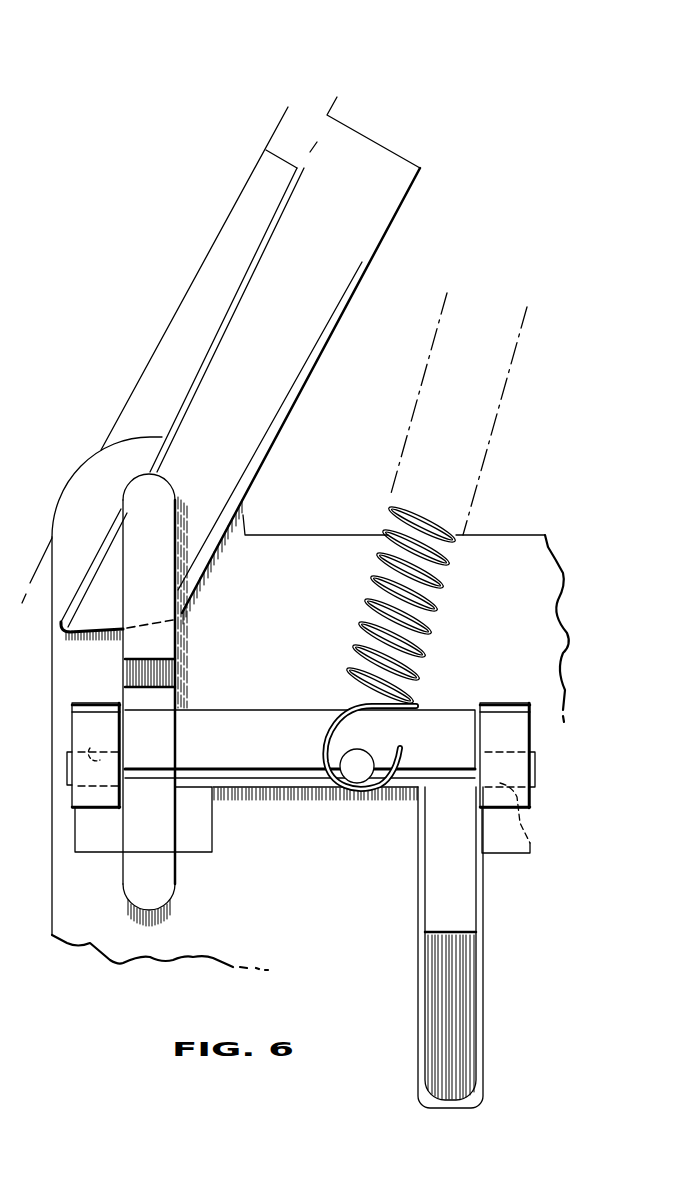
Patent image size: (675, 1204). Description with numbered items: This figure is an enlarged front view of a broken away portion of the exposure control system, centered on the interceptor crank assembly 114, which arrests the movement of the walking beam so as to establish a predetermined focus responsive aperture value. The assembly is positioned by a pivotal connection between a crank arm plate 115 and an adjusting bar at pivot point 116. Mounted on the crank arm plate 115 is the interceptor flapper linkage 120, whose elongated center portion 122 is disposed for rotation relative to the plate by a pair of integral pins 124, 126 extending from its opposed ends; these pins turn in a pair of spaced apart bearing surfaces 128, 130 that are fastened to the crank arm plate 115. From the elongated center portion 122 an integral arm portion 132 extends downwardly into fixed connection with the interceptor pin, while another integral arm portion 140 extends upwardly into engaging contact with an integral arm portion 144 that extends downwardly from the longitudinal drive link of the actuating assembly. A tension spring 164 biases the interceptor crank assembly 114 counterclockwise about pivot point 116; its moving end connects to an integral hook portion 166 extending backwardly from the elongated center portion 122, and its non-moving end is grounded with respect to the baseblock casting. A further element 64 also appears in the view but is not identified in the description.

The frame member 64 is at (134, 703).
The interceptor crank assembly 114 is at (140, 405).
The crank arm plate 115 is at (287, 533).
The pivot point 116 is at (148, 498).
The interceptor flapper linkage 120 is at (259, 705).
The elongated center portion 122 is at (267, 778).
The integral pin 124 is at (67, 768).
The integral pin 126 is at (535, 770).
The bearing surface 128 is at (100, 758).
The bearing surface 130 is at (530, 845).
The integral arm portion 132 is at (447, 900).
The integral arm portion 140 is at (167, 645).
The integral arm portion 144 is at (301, 390).
The tension spring 164 is at (441, 613).
The integral hook portion 166 is at (400, 748).